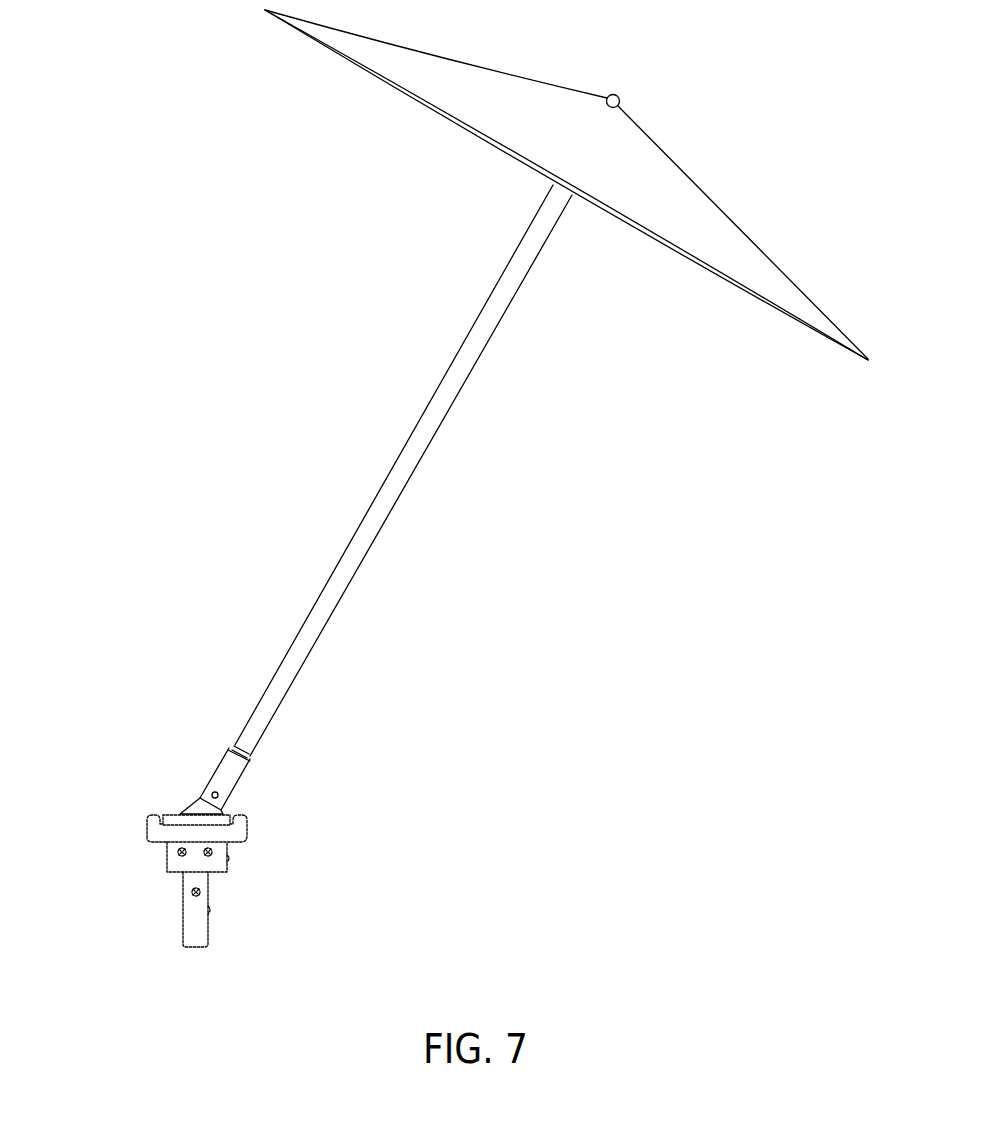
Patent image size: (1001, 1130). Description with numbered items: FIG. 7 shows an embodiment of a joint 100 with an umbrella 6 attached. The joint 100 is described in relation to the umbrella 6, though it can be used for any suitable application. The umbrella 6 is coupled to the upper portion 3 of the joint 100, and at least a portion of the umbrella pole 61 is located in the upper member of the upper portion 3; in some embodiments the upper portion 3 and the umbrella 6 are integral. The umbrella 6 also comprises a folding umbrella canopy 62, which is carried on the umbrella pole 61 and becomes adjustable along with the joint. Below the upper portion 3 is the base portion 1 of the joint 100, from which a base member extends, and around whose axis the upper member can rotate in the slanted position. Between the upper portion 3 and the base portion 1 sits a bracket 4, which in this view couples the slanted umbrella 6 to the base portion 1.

The joint 100 is at (441, 478).
The umbrella 6 is at (551, 383).
The umbrella pole 61 is at (418, 462).
The umbrella canopy 62 is at (660, 165).
The upper portion 3 is at (244, 771).
The mounting bracket 4 is at (248, 830).
The base portion 1 is at (210, 901).